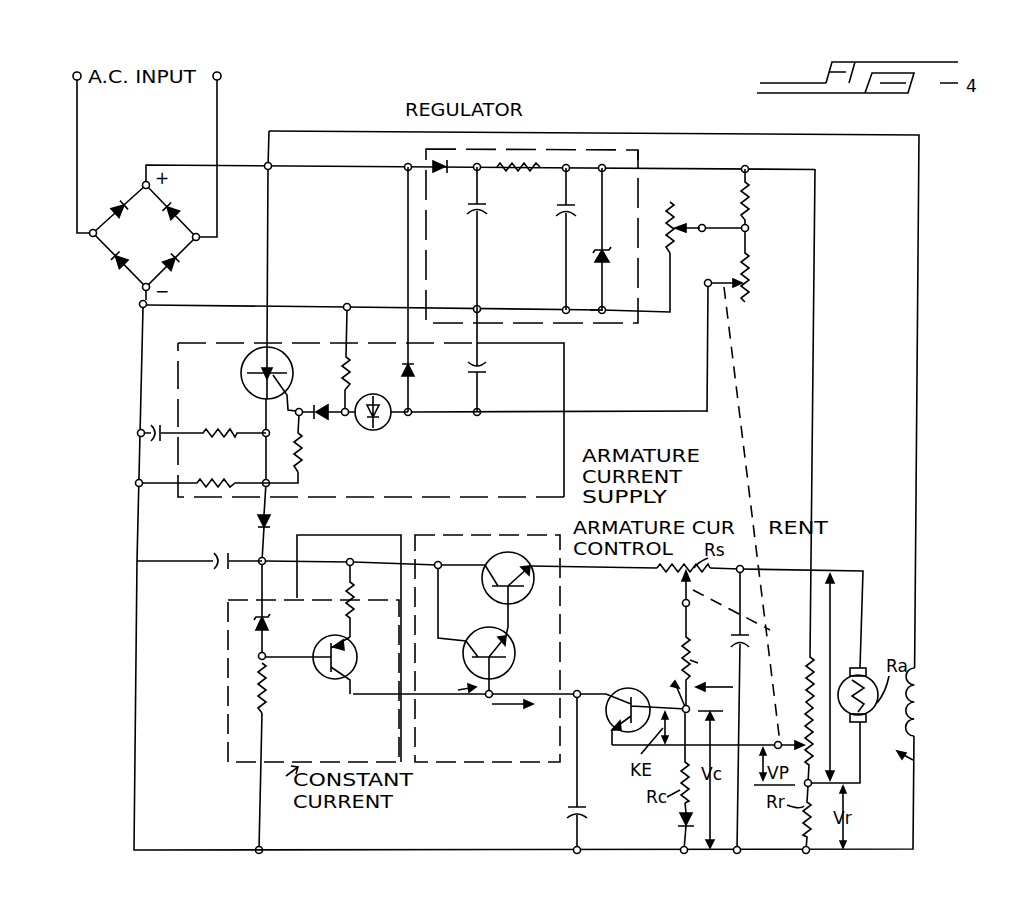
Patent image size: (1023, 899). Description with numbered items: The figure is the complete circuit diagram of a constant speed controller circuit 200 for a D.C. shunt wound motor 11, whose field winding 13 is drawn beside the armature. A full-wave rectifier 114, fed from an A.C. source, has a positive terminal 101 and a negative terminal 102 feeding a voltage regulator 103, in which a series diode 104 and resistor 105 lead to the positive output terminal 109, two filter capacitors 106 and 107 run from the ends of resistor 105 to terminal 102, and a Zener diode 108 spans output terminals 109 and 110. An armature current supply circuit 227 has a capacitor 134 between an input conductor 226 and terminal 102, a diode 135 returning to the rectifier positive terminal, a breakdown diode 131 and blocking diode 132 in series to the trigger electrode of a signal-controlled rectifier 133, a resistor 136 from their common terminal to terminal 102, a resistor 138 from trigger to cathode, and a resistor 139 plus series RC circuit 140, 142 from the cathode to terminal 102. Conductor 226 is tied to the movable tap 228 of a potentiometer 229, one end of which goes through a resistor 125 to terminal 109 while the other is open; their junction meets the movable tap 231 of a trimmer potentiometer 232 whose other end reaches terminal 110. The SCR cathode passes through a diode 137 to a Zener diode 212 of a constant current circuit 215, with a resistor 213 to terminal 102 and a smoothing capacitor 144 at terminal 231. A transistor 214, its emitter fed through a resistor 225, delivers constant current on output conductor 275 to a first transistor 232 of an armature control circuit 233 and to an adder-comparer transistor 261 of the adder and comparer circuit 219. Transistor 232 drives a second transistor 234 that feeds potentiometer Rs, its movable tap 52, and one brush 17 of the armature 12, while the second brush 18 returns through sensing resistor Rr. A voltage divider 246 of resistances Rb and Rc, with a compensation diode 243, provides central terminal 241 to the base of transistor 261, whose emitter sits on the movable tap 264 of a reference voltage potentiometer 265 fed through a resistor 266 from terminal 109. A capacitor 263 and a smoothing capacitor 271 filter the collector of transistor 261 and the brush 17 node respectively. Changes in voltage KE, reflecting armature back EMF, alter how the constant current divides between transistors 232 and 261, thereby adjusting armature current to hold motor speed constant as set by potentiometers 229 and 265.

The D.C. shunt wound motor 11 is at (916, 763).
The armature 12 is at (863, 710).
The field winding 13 is at (917, 700).
The brush 17 is at (862, 667).
The second brush 18 is at (836, 677).
The movable tap 52 is at (690, 579).
The positive terminal 101 is at (141, 186).
The negative terminal 102 is at (137, 291).
The voltage regulator 103 is at (558, 148).
The series diode 104 is at (440, 172).
The resistor 105 is at (516, 173).
The filter capacitor 106 is at (481, 213).
The filter capacitor 107 is at (562, 238).
The Zener diode 108 is at (607, 257).
The positive output terminal 109 is at (641, 153).
The negative polarity terminal 110 is at (600, 315).
The full-wave rectifier 114 is at (154, 257).
The resistor 125 is at (766, 215).
The breakdown diode 131 is at (389, 397).
The blocking diode 132 is at (321, 419).
The signal-controlled rectifier 133 is at (243, 386).
The capacitor 134 is at (487, 371).
The diode 135 is at (414, 373).
The resistor 136 is at (342, 368).
The diode 137 is at (270, 523).
The resistor 138 is at (302, 457).
The resistor 139 is at (235, 478).
The resistor of series RC circuit 140 is at (238, 430).
The capacitor of series RC circuit 142 is at (155, 426).
The smoothing capacitor 144 is at (228, 552).
The constant speed controller circuit 200 is at (486, 853).
The Zener diode 212 is at (269, 621).
The resistor 213 is at (270, 699).
The transistor 214 is at (346, 678).
The constant current circuit 215 is at (246, 764).
The adder and comparer circuit 219 is at (647, 665).
The resistor 225 is at (349, 602).
The input conductor 226 is at (626, 413).
The armature current supply circuit 227 is at (566, 448).
The movable tap 228 is at (728, 281).
The potentiometer 229 is at (748, 276).
The movable tap / common terminal 231 is at (688, 226).
The trimmer potentiometer / first transistor 232 is at (669, 202).
The armature control circuit 233 is at (510, 534).
The second transistor 234 is at (476, 603).
The central terminal 241 is at (683, 659).
The compensation diode 243 is at (677, 823).
The voltage divider 246 is at (734, 687).
The adder-comparer transistor 261 is at (628, 700).
The capacitor 263 is at (566, 808).
The movable tap 264 is at (777, 742).
The reference voltage potentiometer 265 is at (811, 766).
The resistor 266 is at (803, 656).
The smoothing capacitor 271 is at (731, 640).
The output conductor 275 is at (486, 696).